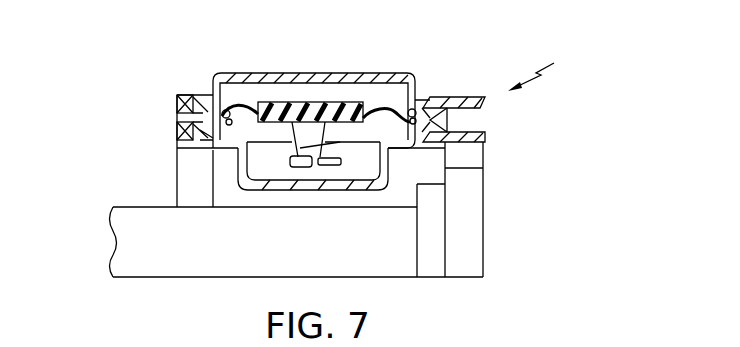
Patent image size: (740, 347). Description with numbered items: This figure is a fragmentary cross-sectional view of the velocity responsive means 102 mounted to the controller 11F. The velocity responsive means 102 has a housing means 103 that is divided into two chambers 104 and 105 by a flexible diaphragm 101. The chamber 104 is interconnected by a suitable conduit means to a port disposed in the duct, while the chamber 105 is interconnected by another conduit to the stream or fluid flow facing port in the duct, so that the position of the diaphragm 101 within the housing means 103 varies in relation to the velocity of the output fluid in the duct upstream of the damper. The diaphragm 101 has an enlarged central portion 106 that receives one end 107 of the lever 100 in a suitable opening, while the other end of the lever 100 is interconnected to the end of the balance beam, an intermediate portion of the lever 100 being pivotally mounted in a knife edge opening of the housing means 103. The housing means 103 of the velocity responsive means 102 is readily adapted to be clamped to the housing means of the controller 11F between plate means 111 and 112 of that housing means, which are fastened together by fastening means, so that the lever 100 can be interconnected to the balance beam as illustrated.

The lever 100 is at (337, 168).
The flexible diaphragm 101 is at (240, 106).
The velocity responsive means 102 is at (194, 78).
The housing means 103 is at (378, 73).
The chamber 104 is at (304, 98).
The chamber 105 is at (256, 160).
The enlarged central portion 106 is at (313, 144).
The end of the lever 107 is at (291, 168).
The plate means 111 is at (478, 132).
The plate means 112 is at (455, 97).
The controller 11F is at (558, 70).